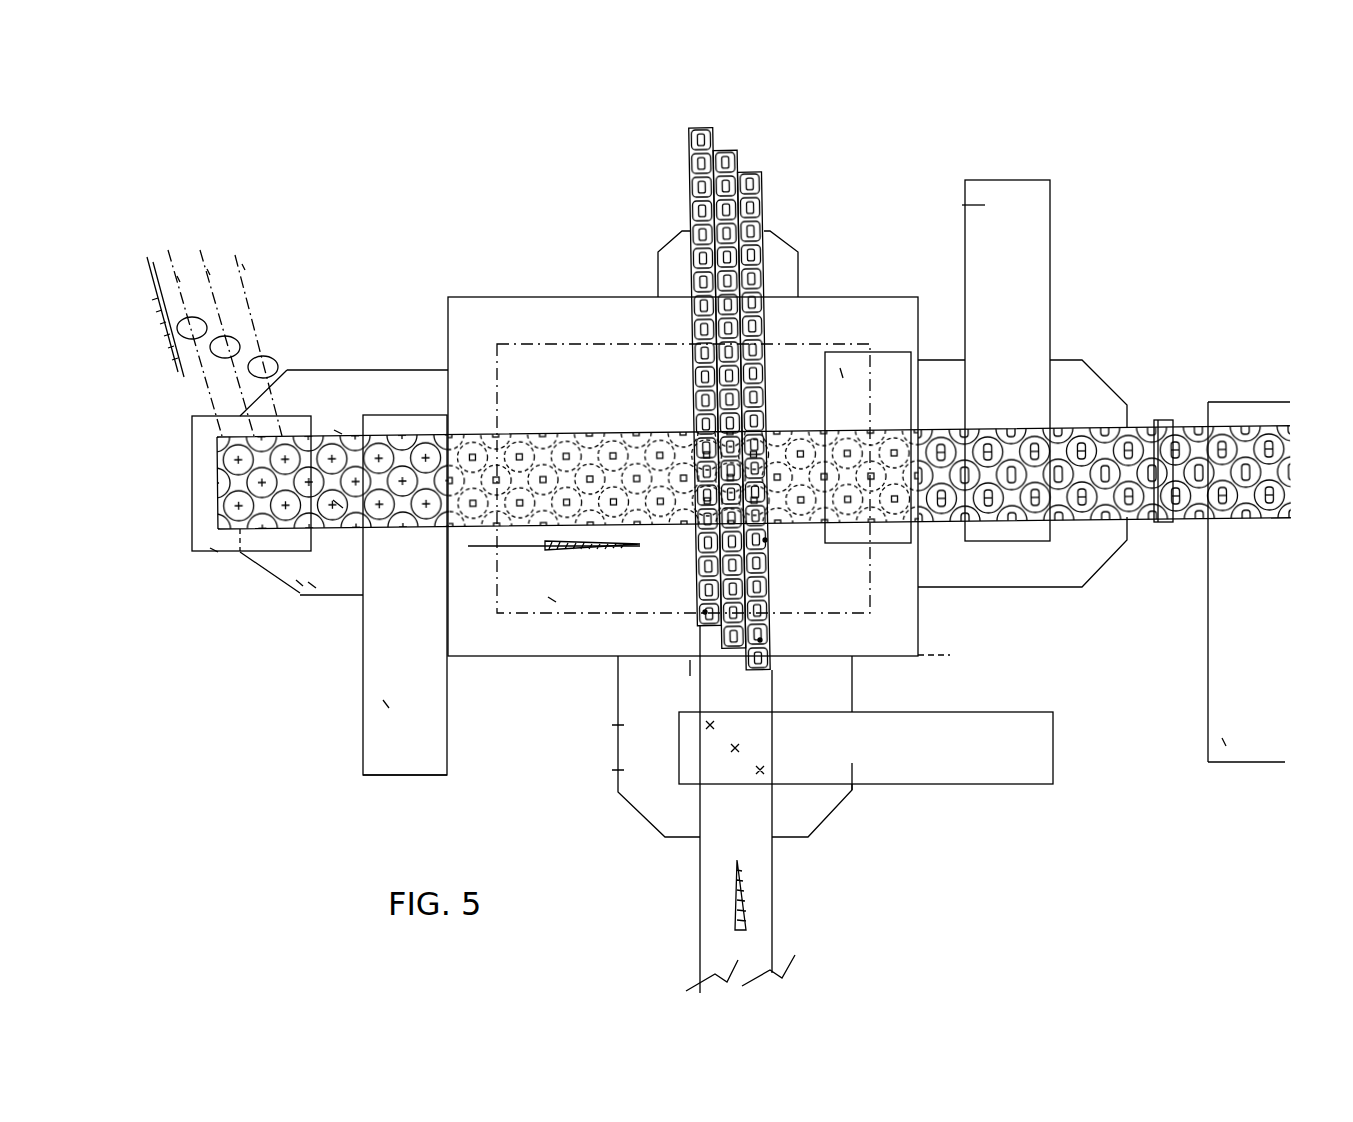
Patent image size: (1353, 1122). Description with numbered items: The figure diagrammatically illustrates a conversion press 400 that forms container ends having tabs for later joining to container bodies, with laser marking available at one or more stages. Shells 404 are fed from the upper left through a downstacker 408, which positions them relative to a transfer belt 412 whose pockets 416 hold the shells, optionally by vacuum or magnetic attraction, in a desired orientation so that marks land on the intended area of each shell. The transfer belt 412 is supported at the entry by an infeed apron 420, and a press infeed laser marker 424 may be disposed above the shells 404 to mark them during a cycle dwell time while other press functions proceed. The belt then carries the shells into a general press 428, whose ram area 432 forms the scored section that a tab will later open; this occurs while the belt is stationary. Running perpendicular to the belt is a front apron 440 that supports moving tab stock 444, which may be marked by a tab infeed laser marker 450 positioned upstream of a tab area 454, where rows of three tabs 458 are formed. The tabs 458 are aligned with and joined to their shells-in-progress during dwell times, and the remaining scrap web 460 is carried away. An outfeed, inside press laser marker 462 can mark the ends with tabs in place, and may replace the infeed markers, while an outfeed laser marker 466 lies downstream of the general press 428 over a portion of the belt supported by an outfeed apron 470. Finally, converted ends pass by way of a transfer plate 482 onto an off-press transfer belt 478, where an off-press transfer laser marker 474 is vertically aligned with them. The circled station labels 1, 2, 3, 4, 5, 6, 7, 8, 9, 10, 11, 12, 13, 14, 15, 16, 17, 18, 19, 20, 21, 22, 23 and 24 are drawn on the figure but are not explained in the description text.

The conversion press 400 is at (896, 200).
The shells 404 is at (265, 362).
The downstacker 408 is at (226, 548).
The transfer belt 412 is at (348, 434).
The pockets 416 is at (350, 568).
The infeed apron 420 is at (312, 585).
The press infeed laser marker 424 is at (415, 755).
The general press 428 is at (910, 628).
The ram area 432 is at (577, 600).
The front apron 440 is at (813, 815).
The tab stock 444 is at (768, 917).
The tab infeed laser marker 450 is at (1035, 747).
The tab area 454 is at (772, 668).
The tabs 458 is at (765, 540).
The scrap web 460 is at (690, 174).
The outfeed, inside press laser marker 462 is at (890, 378).
The outfeed laser marker 466 is at (1025, 307).
The outfeed apron 470 is at (1038, 570).
The off-press transfer laser marker 474 is at (1222, 765).
The off-press transfer belt 478 is at (1198, 436).
The transfer plate 482 is at (1163, 432).
The position 1 is at (915, 630).
The position 2 is at (553, 600).
The position 3 is at (690, 668).
The position 4 is at (718, 842).
The position 5 is at (810, 830).
The position 6 is at (990, 770).
The position 7 is at (766, 552).
The position 8 is at (690, 185).
The position 9 is at (744, 160).
The position 10 is at (790, 282).
The position 11 is at (245, 270).
The position 12 is at (215, 550).
The position 13 is at (300, 588).
The position 14 is at (338, 432).
The position 15 is at (340, 500).
The position 16 is at (385, 705).
The position 17 is at (640, 446).
The position 18 is at (573, 552).
The position 19 is at (840, 374).
The position 20 is at (1090, 564).
The position 21 is at (985, 205).
The position 22 is at (1170, 522).
The position 23 is at (1186, 428).
The position 24 is at (1222, 740).